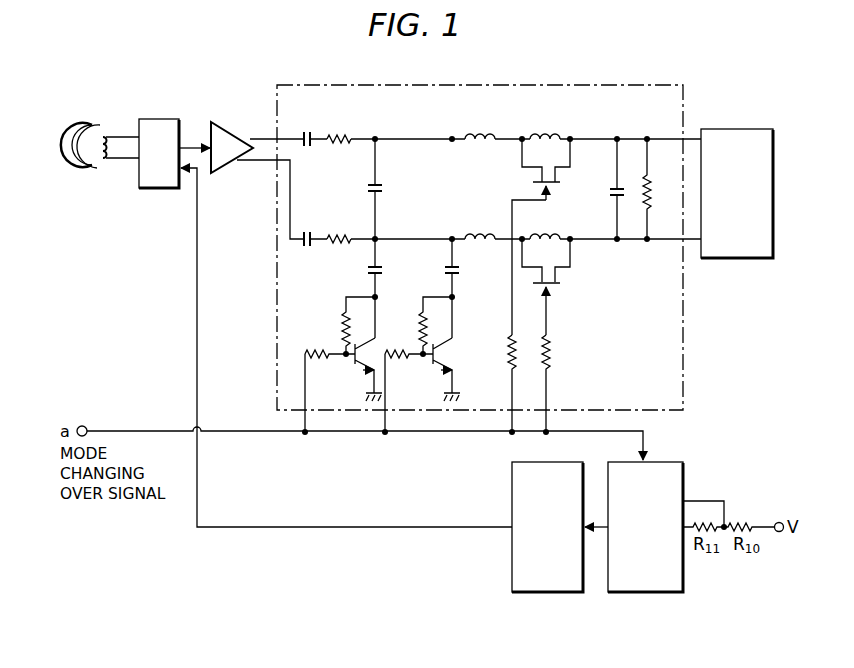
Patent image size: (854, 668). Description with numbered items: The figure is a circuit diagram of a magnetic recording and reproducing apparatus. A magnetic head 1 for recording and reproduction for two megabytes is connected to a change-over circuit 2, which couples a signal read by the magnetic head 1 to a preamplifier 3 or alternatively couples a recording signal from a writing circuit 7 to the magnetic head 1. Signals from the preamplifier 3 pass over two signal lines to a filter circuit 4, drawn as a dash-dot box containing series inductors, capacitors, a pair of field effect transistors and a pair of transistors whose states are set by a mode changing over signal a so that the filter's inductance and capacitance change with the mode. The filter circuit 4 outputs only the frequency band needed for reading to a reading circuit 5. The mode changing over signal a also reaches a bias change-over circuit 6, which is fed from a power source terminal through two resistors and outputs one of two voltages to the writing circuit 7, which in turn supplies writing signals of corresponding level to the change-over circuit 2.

The magnetic head 1 is at (93, 123).
The change-over circuit 2 is at (160, 120).
The preamplifier 3 is at (224, 122).
The filter circuit 4 is at (600, 88).
The reading circuit 5 is at (751, 128).
The bias change-over circuit 6 is at (669, 592).
The writing circuit 7 is at (573, 592).